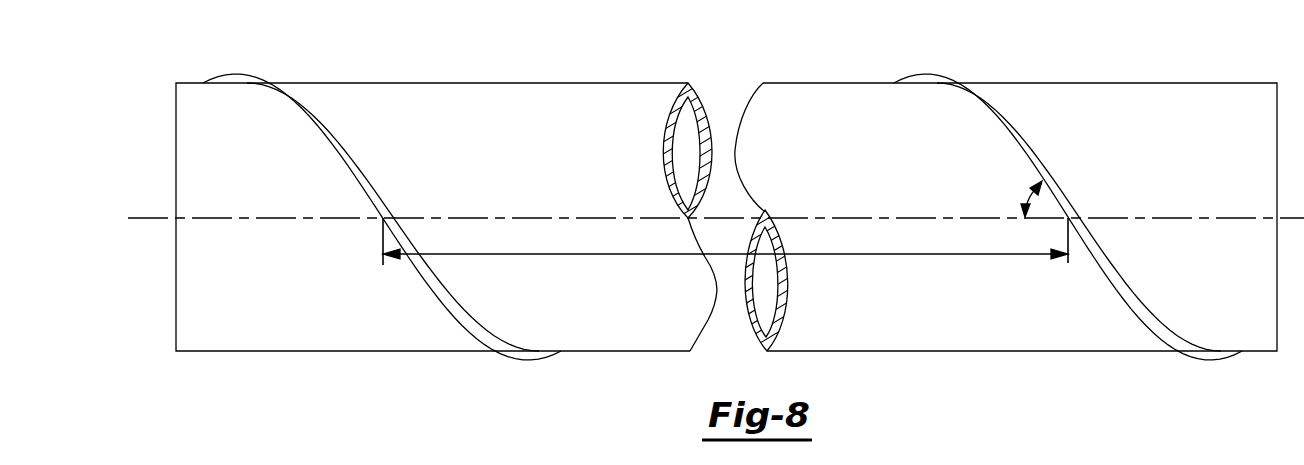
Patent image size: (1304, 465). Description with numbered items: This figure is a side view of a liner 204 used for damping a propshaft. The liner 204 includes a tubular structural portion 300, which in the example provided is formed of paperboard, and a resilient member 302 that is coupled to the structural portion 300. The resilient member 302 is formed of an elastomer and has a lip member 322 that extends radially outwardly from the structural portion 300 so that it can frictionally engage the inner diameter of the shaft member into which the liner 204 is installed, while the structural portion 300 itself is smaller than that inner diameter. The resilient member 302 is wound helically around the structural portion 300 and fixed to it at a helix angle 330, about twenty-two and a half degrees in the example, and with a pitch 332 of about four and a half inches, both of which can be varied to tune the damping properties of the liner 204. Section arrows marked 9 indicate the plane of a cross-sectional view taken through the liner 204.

The liner 204 is at (843, 57).
The structural portion 300 is at (1135, 95).
The resilient member 302 is at (248, 83).
The lip member 322 is at (320, 120).
The helix angle 330 is at (1028, 194).
The pitch 332 is at (877, 256).
The section line 9- 9 is at (365, 120).